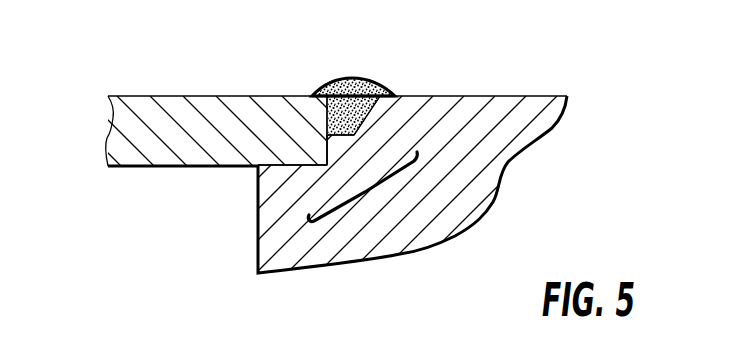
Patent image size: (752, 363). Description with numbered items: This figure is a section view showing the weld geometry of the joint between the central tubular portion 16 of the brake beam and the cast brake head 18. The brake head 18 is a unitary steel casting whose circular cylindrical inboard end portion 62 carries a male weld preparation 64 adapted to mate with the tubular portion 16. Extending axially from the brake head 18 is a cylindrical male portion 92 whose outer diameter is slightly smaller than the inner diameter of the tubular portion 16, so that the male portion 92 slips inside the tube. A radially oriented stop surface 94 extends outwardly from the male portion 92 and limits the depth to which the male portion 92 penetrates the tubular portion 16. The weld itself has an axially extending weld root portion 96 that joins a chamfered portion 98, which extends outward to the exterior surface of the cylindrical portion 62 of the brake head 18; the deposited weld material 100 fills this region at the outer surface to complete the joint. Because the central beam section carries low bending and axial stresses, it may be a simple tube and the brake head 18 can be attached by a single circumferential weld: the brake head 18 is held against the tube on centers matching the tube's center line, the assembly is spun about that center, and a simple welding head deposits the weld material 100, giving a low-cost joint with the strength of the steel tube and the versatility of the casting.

The central tubular portion 16 is at (172, 112).
The cast brake head 18 is at (491, 177).
The circular cylindrical inboard end portion 62 is at (451, 84).
The male weld preparation 64 is at (367, 192).
The cylindrical male portion 92 is at (278, 172).
The stop surface 94 is at (328, 148).
The weld root portion 96 is at (351, 137).
The chamfered portion 98 is at (388, 110).
The weld bead 100 is at (368, 79).